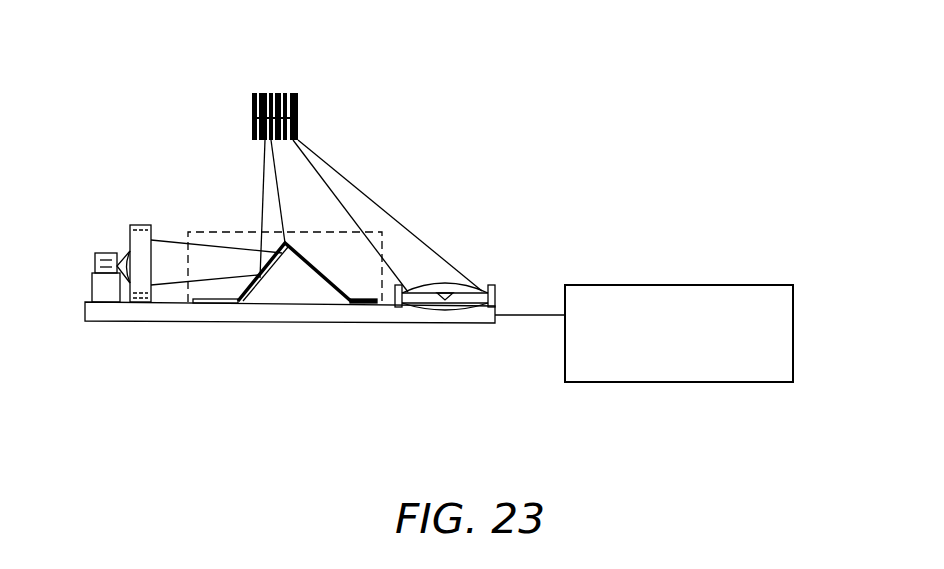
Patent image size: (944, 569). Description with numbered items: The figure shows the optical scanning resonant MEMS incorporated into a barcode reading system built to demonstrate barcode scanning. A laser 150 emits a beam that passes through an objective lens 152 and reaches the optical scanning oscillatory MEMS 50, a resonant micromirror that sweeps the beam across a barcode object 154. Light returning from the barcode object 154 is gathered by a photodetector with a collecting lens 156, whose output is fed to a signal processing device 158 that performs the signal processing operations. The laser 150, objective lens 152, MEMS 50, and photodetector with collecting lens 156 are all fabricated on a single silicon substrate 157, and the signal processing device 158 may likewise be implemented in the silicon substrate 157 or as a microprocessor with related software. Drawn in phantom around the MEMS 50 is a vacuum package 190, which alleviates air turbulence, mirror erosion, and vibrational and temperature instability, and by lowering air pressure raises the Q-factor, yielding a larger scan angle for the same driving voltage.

The optical scanning oscillatory MEMS 50 is at (285, 273).
The laser 150 is at (86, 253).
The objective lens 152 is at (206, 236).
The barcode object 154 is at (367, 175).
The photodetector with a collecting lens 156 is at (469, 272).
The silicon substrate 157 is at (324, 329).
The signal processing device 158 is at (679, 314).
The vacuum package 190 is at (313, 234).